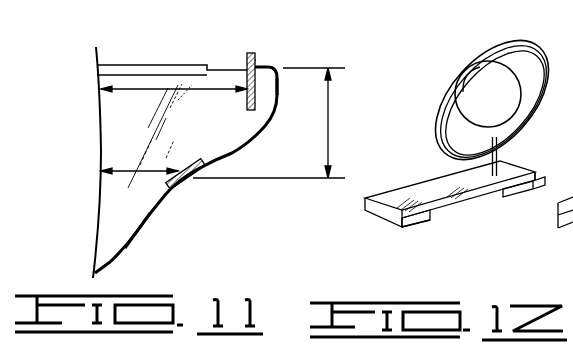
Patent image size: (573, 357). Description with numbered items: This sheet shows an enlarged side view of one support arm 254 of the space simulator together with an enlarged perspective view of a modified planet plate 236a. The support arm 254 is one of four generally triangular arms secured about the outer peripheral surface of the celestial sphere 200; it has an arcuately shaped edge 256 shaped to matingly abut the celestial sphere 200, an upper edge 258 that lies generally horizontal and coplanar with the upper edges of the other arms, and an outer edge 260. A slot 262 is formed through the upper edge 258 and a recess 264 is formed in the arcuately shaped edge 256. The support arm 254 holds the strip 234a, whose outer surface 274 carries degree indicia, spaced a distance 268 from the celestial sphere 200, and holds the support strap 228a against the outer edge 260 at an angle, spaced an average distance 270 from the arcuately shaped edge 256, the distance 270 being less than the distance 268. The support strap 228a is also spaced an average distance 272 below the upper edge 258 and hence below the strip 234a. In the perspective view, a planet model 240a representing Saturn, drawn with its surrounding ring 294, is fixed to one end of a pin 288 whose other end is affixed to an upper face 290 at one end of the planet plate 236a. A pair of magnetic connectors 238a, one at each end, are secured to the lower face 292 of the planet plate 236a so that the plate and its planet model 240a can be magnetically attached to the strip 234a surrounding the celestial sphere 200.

In FIG. 11, the celestial sphere 200 is at (99, 54).
In FIG. 11, the support strap 228a is at (186, 178).
In FIG. 11, the strip 234a is at (255, 57).
In FIG. 12, the planet plate 236a is at (428, 193).
In FIG. 12, the connectors 238a is at (523, 195).
In FIG. 12, the planet model 240a is at (490, 60).
In FIG. 11, the support arm 254 is at (230, 130).
In FIG. 11, the arcuately shaped edge 256 is at (100, 133).
In FIG. 11, the upper edge 258 is at (221, 65).
In FIG. 11, the outer edge 260 is at (143, 220).
In FIG. 11, the slot 262 is at (247, 109).
In FIG. 11, the recess 264 is at (172, 181).
In FIG. 11, the distance 268 is at (127, 89).
In FIG. 11, the distance 270 is at (130, 171).
In FIG. 11, the average distance 272 is at (331, 100).
In FIG. 11, the outer surface 274 is at (255, 65).
In FIG. 12, the pin 288 is at (497, 152).
In FIG. 12, the upper face 290 is at (523, 173).
In FIG. 12, the lower face 292 is at (438, 212).
In FIG. 12, the ring 294 is at (493, 100).